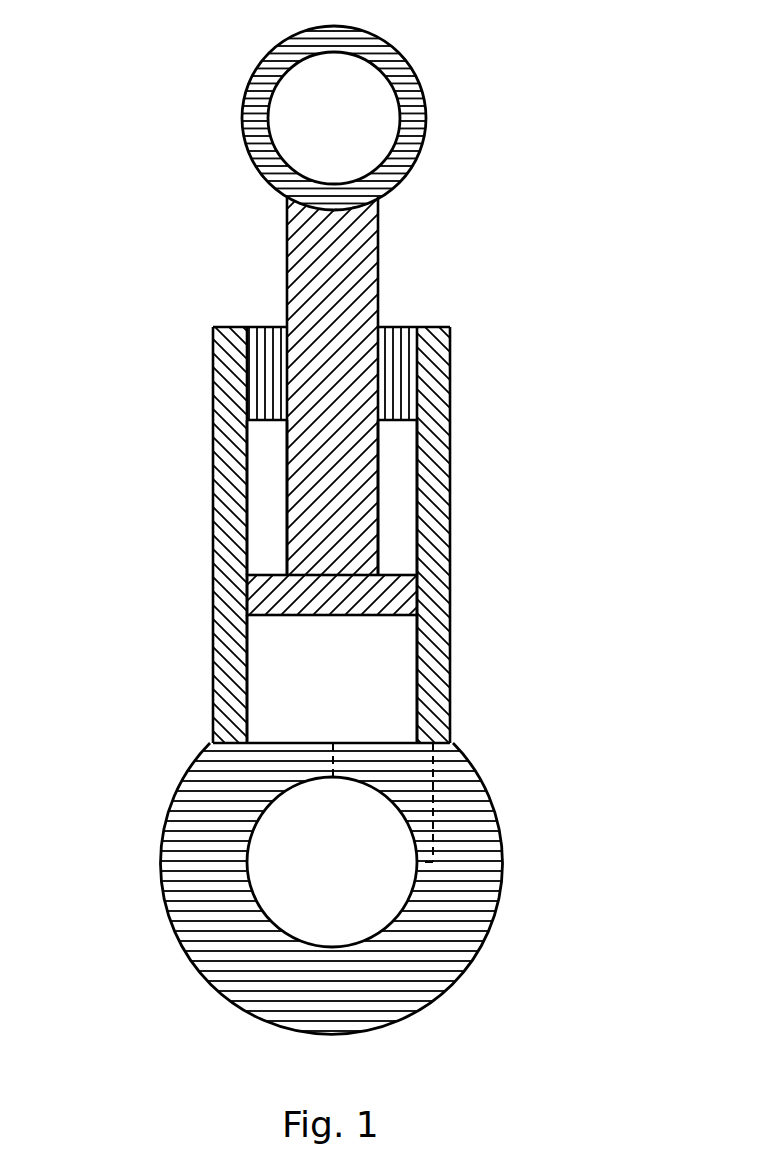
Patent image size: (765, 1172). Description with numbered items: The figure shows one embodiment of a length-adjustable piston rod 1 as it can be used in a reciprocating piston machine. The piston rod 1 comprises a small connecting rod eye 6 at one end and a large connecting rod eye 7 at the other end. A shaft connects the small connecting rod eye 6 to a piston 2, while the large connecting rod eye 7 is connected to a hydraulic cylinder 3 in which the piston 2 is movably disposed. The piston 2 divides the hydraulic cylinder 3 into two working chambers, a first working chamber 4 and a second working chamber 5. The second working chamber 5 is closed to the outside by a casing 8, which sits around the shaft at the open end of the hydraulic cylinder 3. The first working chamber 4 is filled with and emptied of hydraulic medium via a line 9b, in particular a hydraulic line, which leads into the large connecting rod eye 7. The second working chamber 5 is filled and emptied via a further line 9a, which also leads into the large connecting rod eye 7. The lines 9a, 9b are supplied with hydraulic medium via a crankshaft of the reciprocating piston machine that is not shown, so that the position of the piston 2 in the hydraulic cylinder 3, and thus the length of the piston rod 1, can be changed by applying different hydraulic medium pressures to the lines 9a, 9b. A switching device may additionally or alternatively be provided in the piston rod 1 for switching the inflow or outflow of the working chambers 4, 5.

The length-adjustable piston rod 1 is at (523, 328).
The piston 2 is at (385, 590).
The hydraulic cylinder 3 is at (252, 515).
The first working chamber 4 is at (270, 680).
The second working chamber 5 is at (400, 495).
The small connecting rod eye 6 is at (363, 103).
The large connecting rod eye 7 is at (368, 908).
The casing 8 is at (265, 347).
The further line 9a is at (433, 790).
The line 9b is at (333, 752).